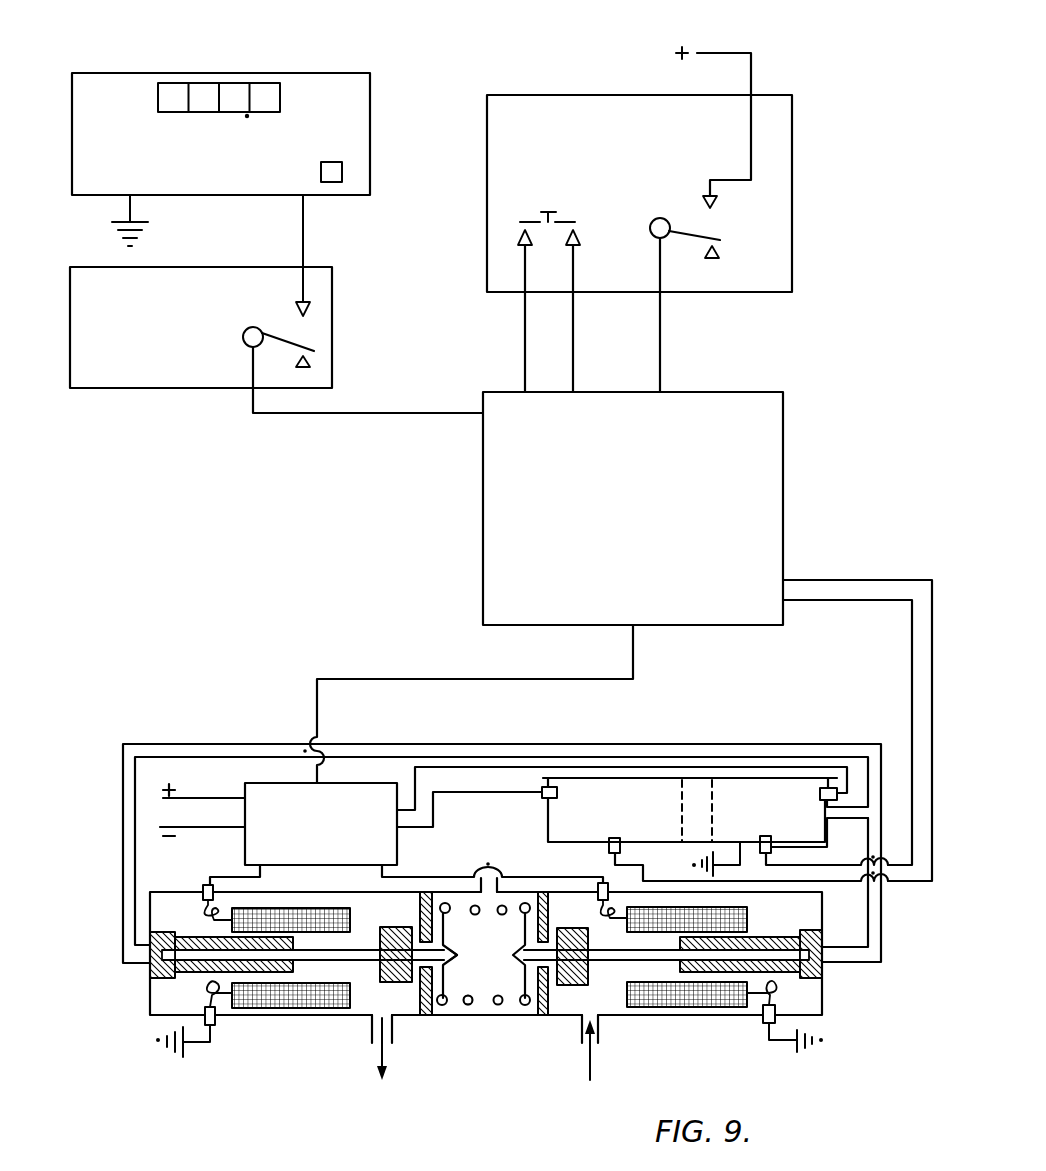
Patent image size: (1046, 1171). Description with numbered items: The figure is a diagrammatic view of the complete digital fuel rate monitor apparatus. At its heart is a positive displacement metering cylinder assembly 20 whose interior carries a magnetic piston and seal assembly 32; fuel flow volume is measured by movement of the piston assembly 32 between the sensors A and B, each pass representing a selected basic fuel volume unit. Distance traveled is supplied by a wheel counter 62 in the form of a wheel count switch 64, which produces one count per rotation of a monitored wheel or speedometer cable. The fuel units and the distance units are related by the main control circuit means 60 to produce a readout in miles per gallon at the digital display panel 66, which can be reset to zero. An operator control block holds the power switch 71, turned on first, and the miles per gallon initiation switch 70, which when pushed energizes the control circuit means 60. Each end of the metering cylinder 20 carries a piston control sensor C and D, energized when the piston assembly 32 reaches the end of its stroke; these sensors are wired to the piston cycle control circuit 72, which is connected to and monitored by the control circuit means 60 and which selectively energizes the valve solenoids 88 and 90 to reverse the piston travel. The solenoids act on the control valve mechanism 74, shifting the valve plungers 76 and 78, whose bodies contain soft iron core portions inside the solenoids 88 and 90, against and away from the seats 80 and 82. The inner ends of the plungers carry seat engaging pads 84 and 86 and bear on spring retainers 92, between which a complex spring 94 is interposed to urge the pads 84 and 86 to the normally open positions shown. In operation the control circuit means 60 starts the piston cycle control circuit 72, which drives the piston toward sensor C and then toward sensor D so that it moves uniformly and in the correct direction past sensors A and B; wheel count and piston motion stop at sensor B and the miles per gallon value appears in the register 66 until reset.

The positive displacement metering cylinder assembly 20 is at (785, 773).
The magnetic piston and seal assembly 32 is at (668, 814).
The control circuit means 60 is at (498, 522).
The wheel counter 62 is at (90, 262).
The wheel count switch 64 is at (310, 333).
The digital display panel 66 is at (147, 83).
The miles per gallon initiation switch 70 is at (497, 207).
The power switch 71 is at (747, 207).
The piston cycle control circuit 72 is at (258, 772).
The control valve mechanism 74 is at (508, 1028).
The valve plunger 76 is at (165, 970).
The valve plunger 78 is at (826, 977).
The seat 80 is at (466, 1005).
The seat 82 is at (549, 972).
The seat engaging pad 84 is at (383, 982).
The seat engaging pad 86 is at (590, 982).
The valve solenoid 88 is at (300, 993).
The valve solenoid 90 is at (682, 993).
The spring retainer 92 is at (483, 954).
The complex spring 94 is at (458, 958).
The sensor A is at (777, 806).
The sensor B is at (617, 838).
The piston control sensor C is at (548, 786).
The piston control sensor D is at (835, 787).